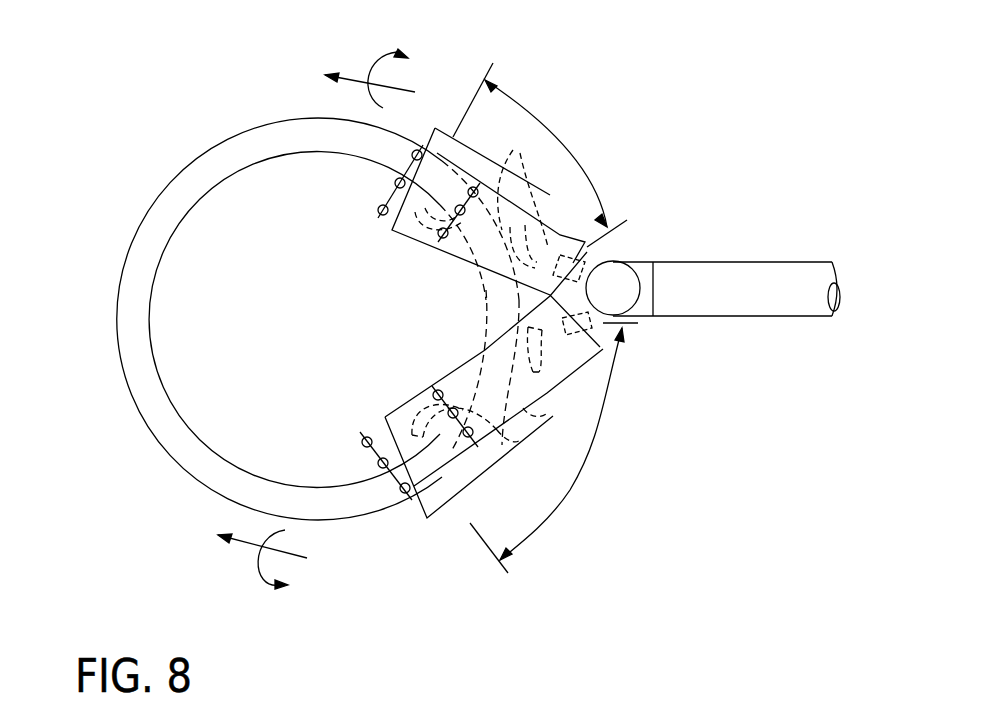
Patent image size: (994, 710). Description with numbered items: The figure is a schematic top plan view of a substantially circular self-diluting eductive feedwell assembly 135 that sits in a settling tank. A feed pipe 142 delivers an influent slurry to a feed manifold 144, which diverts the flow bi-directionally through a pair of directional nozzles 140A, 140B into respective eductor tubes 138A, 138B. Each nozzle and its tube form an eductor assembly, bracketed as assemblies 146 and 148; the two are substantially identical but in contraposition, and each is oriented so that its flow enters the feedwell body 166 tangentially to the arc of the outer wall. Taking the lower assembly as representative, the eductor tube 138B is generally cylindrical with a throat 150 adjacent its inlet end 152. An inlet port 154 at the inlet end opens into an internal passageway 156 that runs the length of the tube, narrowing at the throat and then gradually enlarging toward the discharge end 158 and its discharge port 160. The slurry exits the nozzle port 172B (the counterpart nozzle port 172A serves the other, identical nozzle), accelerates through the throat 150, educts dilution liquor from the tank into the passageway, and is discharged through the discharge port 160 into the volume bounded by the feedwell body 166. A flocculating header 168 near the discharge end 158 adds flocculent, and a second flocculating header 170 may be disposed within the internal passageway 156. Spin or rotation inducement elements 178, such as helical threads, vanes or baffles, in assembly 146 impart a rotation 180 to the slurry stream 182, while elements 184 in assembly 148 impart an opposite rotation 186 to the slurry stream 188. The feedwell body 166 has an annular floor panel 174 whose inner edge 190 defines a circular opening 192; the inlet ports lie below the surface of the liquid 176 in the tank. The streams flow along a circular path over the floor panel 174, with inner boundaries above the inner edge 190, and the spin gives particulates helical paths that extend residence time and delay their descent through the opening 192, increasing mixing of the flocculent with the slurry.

The self-diluting eductive feedwell assembly 135 is at (258, 110).
The eductor tube 138A is at (477, 205).
The eductor tube 138B is at (451, 420).
The directional nozzle 140A is at (618, 228).
The directional nozzle 140B is at (640, 283).
The feed pipe 142 is at (768, 302).
The feed manifold 144 is at (640, 307).
The nozzle and tube eductor assembly 146 is at (545, 117).
The nozzle and tube eductor assembly 148 is at (583, 473).
The throat 150 is at (523, 328).
The inlet end 152 is at (548, 297).
The inlet port 154 is at (598, 347).
The internal passageway 156 is at (636, 310).
The discharge end 158 is at (387, 404).
The discharge port 160 is at (362, 440).
The feedwell body 166 is at (118, 262).
The flocculating header 168 is at (410, 502).
The second flocculating header 170 is at (477, 482).
The first jaw 172A is at (565, 225).
The nozzle port 172B is at (570, 358).
The annular floor panel 174 is at (362, 508).
The liquid 176 is at (122, 460).
The spin or rotation inducement elements 178 is at (501, 129).
The rotation or spin 180 is at (373, 77).
The slurry stream 182 is at (403, 82).
The spin or rotation inducement elements 184 is at (527, 445).
The rotation or spin 186 is at (257, 575).
The slurry stream 188 is at (243, 550).
The inner edge 190 is at (178, 410).
The circular opening 192 is at (235, 280).